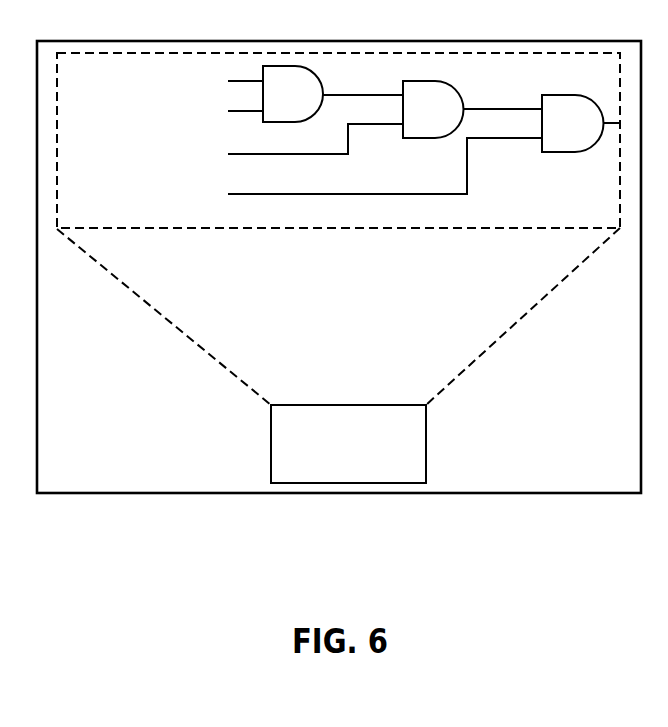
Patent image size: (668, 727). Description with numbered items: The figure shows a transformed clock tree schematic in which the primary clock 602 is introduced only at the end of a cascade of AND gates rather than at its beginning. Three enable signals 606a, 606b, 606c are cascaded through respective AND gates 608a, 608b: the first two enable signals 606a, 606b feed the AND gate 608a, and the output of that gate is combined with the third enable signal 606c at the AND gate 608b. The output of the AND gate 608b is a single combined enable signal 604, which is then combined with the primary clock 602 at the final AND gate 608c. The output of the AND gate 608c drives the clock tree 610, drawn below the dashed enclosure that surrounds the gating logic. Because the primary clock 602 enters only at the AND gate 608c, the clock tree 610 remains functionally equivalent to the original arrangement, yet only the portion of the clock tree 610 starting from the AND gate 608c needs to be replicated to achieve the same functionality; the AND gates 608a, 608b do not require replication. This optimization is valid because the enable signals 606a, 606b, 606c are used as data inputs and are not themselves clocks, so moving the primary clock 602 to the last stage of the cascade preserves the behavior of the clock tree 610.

The primary clock 602 is at (305, 172).
The enable signal 604 is at (502, 96).
The enable signal 606a is at (181, 79).
The enable signal 606b is at (181, 111).
The enable signal 606c is at (252, 145).
The AND gate 608a is at (333, 94).
The AND gate 608b is at (433, 109).
The AND gate 608c is at (581, 123).
The clock tree 610 is at (348, 444).